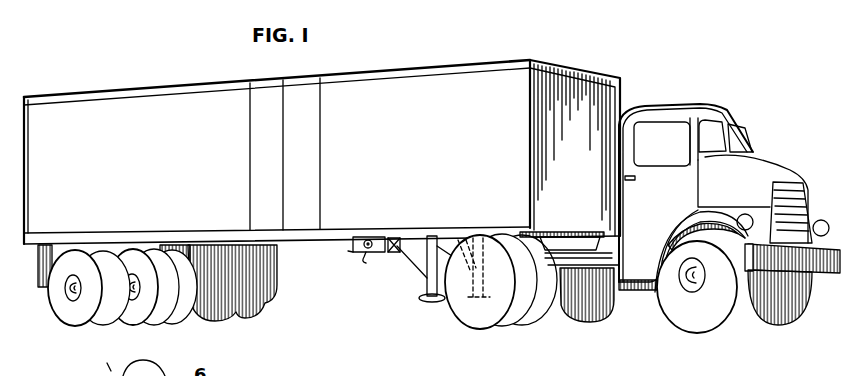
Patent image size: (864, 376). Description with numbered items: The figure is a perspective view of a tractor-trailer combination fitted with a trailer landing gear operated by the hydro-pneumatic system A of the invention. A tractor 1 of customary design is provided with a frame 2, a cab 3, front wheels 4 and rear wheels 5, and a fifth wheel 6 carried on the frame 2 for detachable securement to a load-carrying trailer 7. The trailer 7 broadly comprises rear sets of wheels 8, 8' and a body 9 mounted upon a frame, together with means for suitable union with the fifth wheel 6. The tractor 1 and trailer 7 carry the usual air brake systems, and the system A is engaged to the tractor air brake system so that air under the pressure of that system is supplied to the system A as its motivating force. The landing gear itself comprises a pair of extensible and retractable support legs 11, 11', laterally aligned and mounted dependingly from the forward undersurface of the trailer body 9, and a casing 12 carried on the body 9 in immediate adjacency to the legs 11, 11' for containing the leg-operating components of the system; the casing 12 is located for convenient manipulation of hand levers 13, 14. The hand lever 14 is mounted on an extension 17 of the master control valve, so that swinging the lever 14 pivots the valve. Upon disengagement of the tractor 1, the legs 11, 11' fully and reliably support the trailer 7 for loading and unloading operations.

The tractor 1 is at (683, 102).
The frame 2 is at (574, 268).
The cab 3 is at (700, 113).
The front wheels 4 is at (683, 326).
The rear wheels 5 is at (480, 318).
The fifth wheel 6 is at (536, 303).
The trailer 7 is at (446, 94).
The rear set of wheels 8 is at (137, 305).
The rear set of wheels 8' is at (83, 301).
The body 9 is at (271, 215).
The support leg 11 is at (426, 290).
The support leg 11' is at (466, 295).
The casing 12 is at (396, 253).
The hand lever 13 is at (348, 251).
The hand lever 14 is at (364, 257).
The extension 17 is at (160, 368).
The hydro-pneumatic system A is at (398, 297).